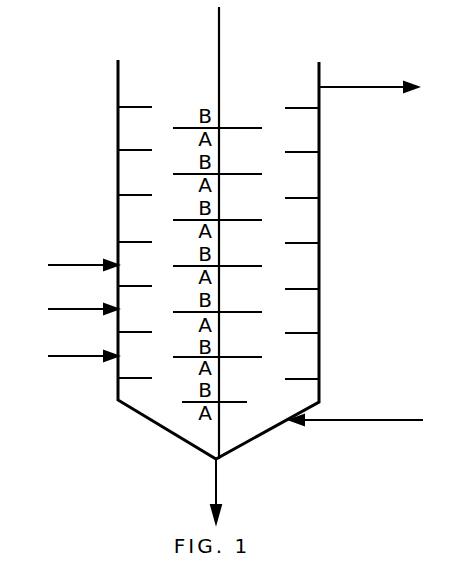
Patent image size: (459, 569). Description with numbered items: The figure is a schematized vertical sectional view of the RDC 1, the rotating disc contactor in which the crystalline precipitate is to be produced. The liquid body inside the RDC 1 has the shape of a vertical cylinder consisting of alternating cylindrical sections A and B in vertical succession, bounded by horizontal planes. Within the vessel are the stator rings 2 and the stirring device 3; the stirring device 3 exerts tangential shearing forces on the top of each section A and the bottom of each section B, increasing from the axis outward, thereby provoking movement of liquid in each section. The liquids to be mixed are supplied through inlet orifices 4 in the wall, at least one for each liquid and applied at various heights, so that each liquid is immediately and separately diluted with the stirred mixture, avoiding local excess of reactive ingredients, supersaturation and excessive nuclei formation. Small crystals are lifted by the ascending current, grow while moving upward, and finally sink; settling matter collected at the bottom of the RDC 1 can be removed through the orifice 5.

The RDC 1 is at (218, 233).
The stator rings 2 is at (218, 231).
The stirring device 3 is at (217, 252).
The inlet orifices 4 is at (235, 259).
The orifice 5 is at (222, 491).